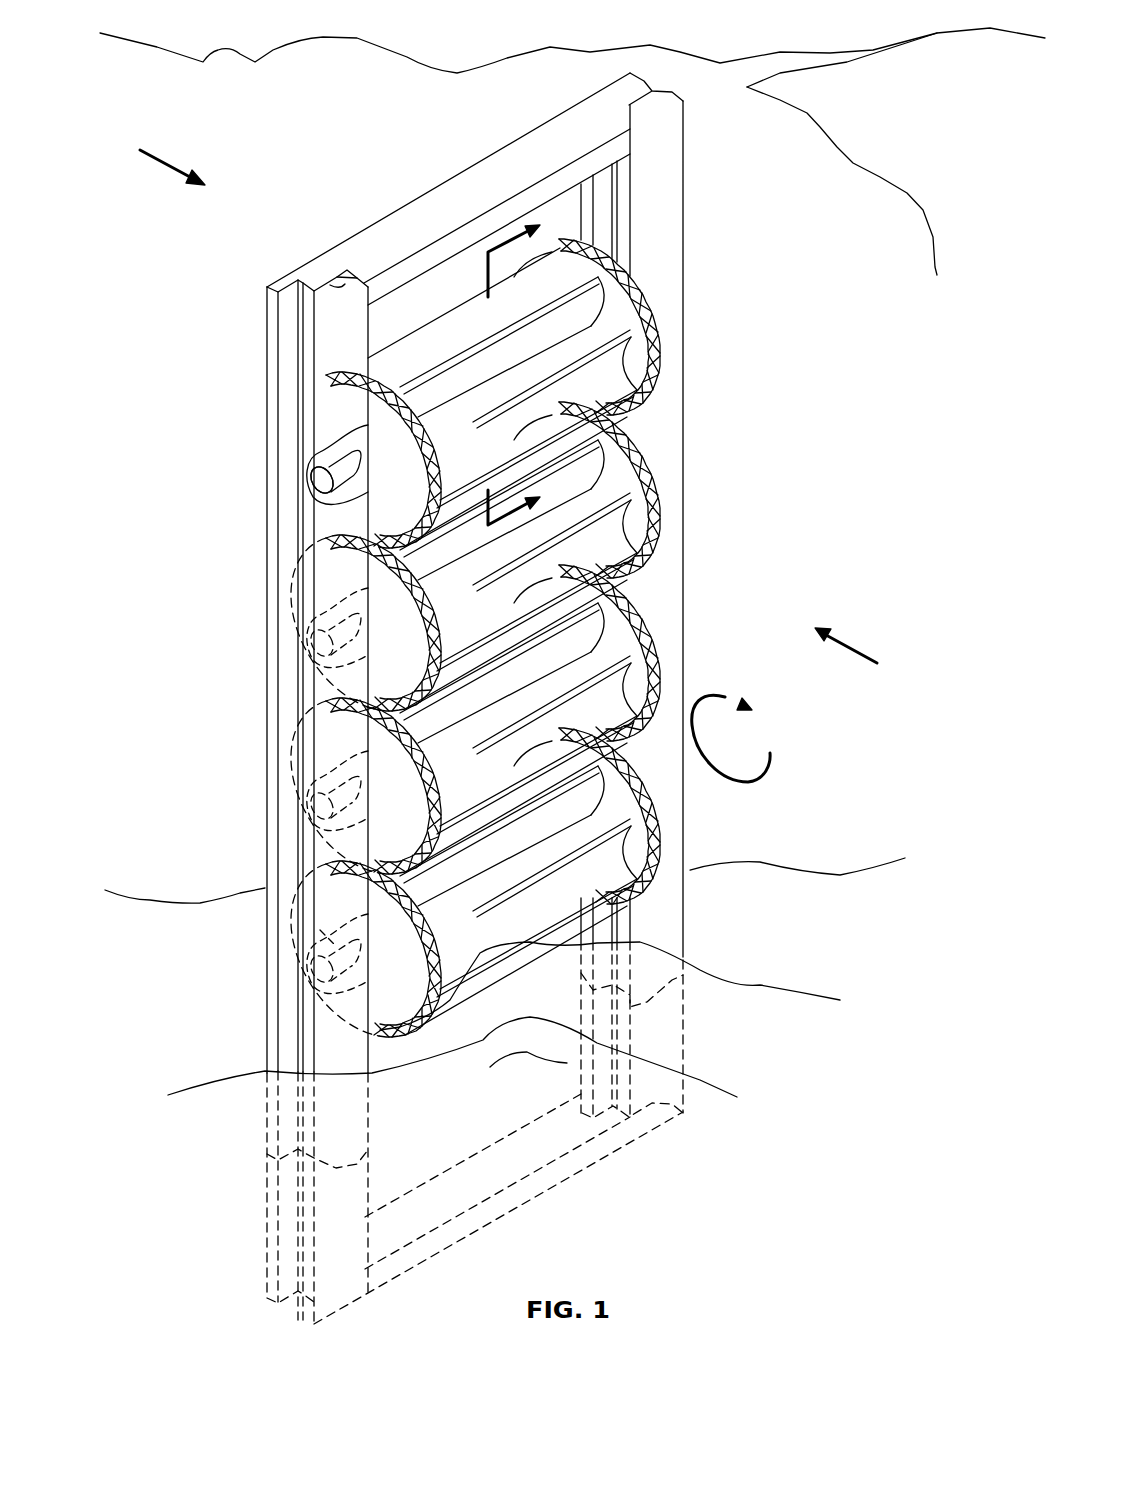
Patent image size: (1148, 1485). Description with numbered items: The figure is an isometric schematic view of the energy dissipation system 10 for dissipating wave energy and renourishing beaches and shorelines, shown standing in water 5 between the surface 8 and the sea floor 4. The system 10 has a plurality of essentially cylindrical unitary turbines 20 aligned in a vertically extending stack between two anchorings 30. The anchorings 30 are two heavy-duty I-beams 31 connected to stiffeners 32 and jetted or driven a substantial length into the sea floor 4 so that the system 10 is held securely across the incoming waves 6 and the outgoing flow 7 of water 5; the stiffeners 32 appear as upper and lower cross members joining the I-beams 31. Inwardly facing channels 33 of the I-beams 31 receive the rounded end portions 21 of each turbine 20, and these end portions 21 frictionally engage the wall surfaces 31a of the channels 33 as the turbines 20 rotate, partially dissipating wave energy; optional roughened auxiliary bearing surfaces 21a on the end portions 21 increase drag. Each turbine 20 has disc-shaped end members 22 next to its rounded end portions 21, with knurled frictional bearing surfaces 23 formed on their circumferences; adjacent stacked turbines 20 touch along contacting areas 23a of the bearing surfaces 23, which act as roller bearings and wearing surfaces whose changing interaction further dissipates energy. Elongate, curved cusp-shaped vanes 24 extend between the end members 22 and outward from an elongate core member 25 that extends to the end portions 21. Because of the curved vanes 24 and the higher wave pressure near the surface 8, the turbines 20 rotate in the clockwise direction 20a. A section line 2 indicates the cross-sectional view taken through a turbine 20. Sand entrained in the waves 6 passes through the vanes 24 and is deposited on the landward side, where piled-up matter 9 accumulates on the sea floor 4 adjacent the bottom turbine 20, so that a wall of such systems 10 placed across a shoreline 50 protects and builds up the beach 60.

The section line 2 is at (522, 366).
The sea floor 4 is at (178, 905).
The water 5 is at (127, 388).
The incoming waves 6 is at (160, 170).
The outgoing flow 7 is at (860, 645).
The surface 8 is at (212, 58).
The piled-up matter 9 is at (785, 1025).
The energy dissipation system 10 is at (205, 555).
The turbines 20 is at (473, 625).
The clock-wise direction 20a is at (770, 767).
The rounded end portions 21 is at (308, 484).
The auxiliary bearing surfaces 21a is at (315, 462).
The disc-shaped end members 22 is at (381, 493).
The knurled frictional bearing surfaces 23 is at (652, 320).
The adjacent areas 23a is at (377, 710).
The cusp-shaped vanes 24 is at (444, 338).
The core member 25 is at (325, 937).
The anchorings 30 is at (245, 262).
The I-beams 31 is at (683, 150).
The wall surfaces 31a is at (347, 270).
The stiffeners 32 is at (490, 168).
The channels 33 is at (343, 268).
The shoreline 50 is at (855, 165).
The beach 60 is at (866, 120).